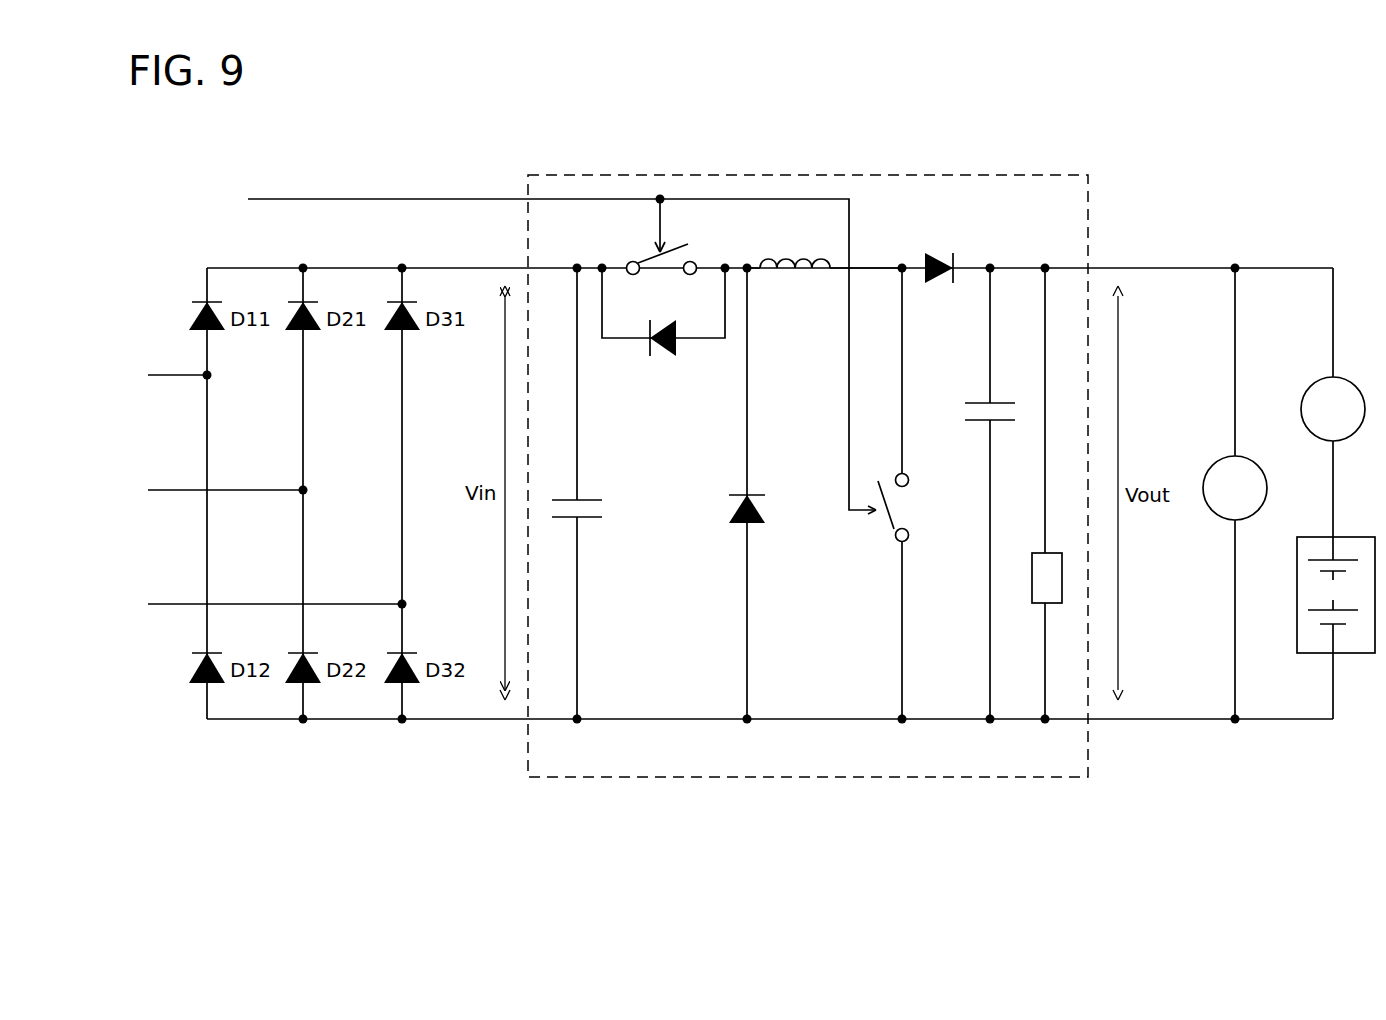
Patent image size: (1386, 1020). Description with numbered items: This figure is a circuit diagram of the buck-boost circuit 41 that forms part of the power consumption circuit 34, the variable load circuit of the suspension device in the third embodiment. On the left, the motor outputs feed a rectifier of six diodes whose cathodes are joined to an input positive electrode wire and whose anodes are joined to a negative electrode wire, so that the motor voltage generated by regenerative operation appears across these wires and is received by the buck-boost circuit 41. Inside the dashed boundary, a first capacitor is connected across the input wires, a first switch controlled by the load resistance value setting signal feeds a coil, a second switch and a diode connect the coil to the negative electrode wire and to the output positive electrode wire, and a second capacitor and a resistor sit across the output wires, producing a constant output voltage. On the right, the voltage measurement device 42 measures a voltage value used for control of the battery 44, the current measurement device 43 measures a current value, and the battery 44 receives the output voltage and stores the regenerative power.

The power consumption circuit 34 is at (800, 140).
The buck-boost circuit 41 is at (900, 173).
The voltage measurement device 42 is at (1246, 458).
The current measurement device 43 is at (1341, 378).
The battery 44 is at (1346, 538).